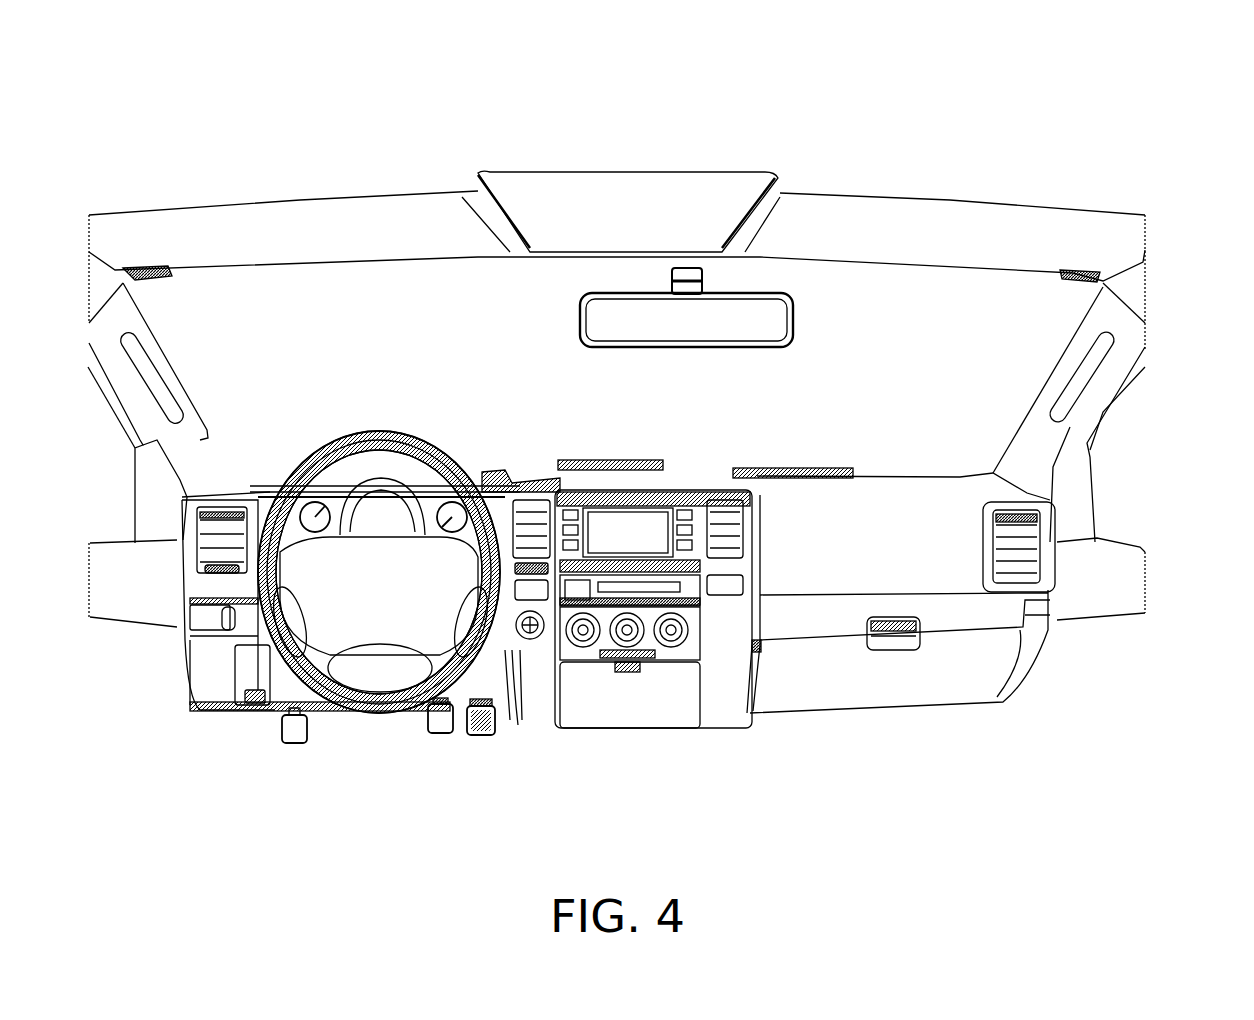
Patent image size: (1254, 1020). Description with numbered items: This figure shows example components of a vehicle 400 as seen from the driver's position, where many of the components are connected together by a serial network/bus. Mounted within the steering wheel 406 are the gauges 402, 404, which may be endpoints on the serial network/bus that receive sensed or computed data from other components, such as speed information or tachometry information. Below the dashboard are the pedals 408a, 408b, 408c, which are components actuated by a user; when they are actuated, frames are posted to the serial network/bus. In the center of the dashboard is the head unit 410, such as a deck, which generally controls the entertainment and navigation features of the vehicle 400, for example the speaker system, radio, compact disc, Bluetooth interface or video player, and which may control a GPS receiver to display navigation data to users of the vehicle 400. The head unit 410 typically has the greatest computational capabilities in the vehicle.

The vehicle 400 is at (1164, 65).
The gauge 402 is at (310, 502).
The gauge 404 is at (457, 502).
The steering wheel 406 is at (383, 544).
The pedal 408a is at (290, 746).
The pedal 408b is at (437, 736).
The pedal 408c is at (483, 737).
The head unit 410 is at (638, 495).